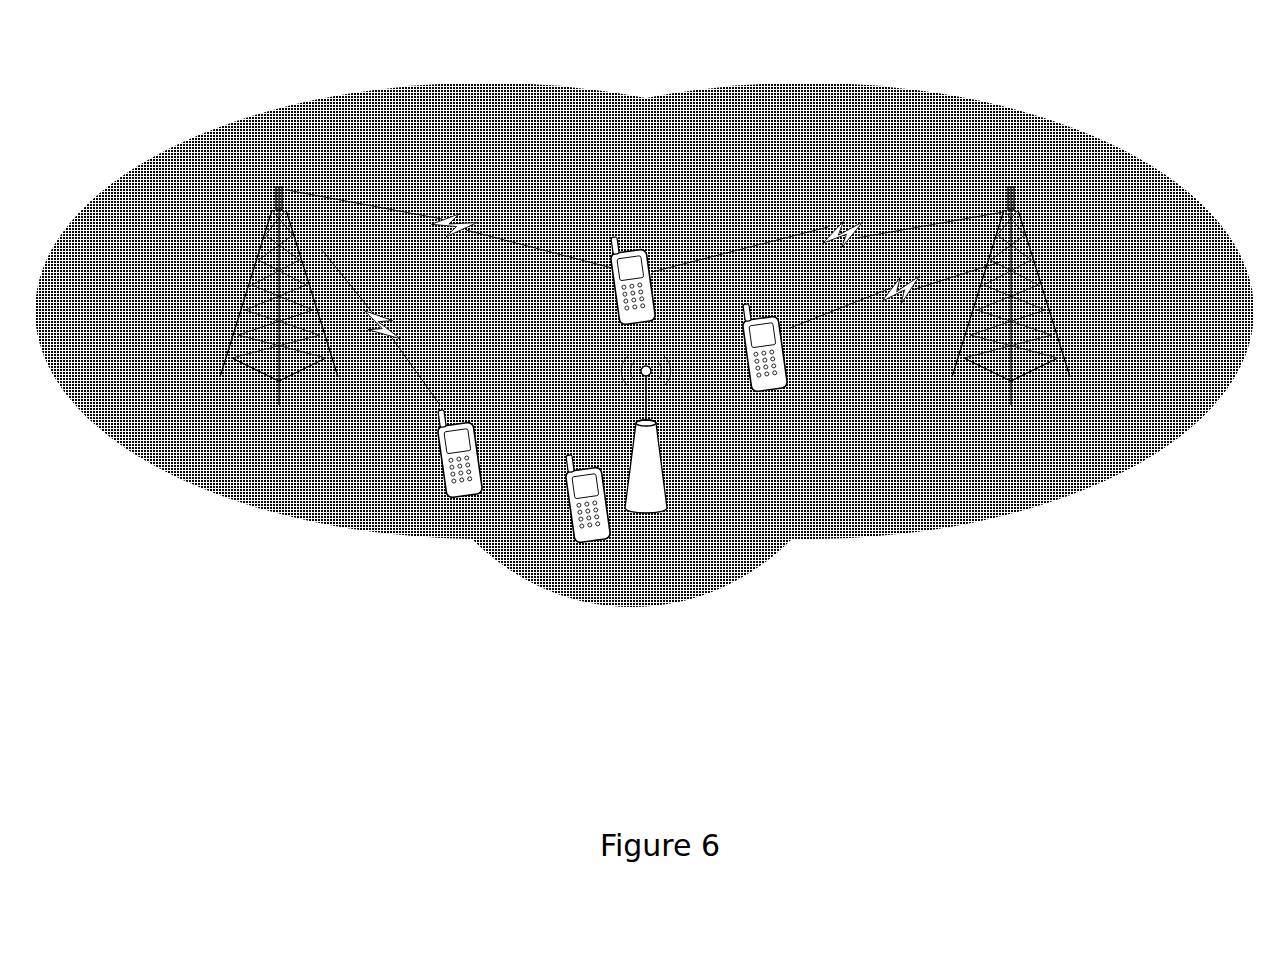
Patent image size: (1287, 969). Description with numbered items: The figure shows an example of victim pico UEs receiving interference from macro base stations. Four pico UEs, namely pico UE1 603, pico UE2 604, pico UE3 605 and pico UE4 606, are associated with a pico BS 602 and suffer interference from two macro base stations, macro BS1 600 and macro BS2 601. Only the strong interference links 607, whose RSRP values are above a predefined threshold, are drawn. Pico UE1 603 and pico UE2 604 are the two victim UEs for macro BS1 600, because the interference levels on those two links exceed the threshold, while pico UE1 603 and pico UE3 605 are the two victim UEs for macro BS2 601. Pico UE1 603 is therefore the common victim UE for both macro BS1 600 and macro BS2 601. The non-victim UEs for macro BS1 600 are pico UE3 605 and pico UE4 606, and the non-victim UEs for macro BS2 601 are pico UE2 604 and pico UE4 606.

The macro BS1 600 is at (280, 167).
The macro BS2 601 is at (1012, 185).
The pico BS 602 is at (672, 498).
The pico UE1 603 is at (628, 230).
The pico UE2 604 is at (437, 472).
The pico UE3 605 is at (787, 372).
The pico UE4 606 is at (573, 517).
The strong interference links 607 is at (455, 216).